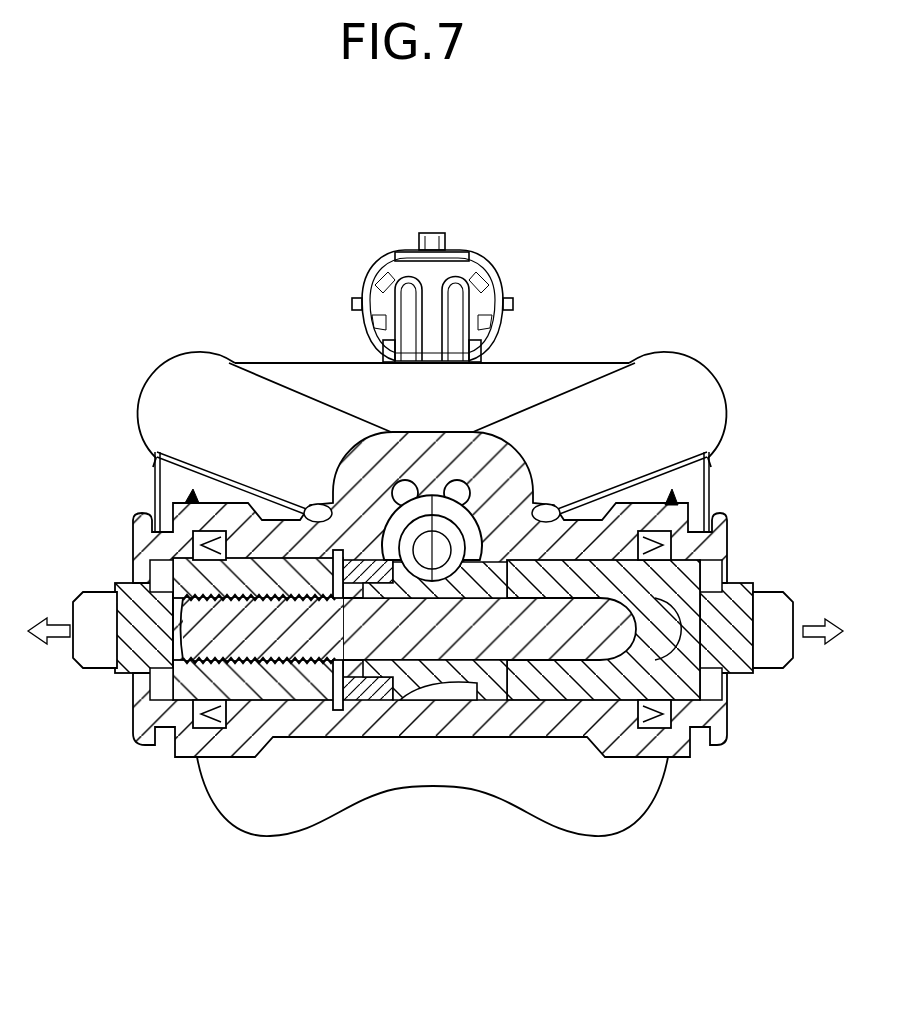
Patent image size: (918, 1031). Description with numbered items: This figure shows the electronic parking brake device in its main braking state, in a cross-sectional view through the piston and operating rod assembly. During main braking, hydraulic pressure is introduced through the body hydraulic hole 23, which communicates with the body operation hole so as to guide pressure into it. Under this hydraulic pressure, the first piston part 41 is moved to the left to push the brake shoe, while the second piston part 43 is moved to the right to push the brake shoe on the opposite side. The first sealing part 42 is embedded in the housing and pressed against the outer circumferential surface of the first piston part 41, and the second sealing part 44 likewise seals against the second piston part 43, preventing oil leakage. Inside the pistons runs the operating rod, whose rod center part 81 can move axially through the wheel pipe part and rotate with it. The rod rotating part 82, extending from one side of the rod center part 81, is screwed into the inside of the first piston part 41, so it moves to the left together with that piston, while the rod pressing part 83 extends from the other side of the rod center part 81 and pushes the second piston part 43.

The body hydraulic hole 23 is at (420, 498).
The first piston part 41 is at (143, 635).
The first sealing part 42 is at (198, 718).
The second piston part 43 is at (733, 662).
The second sealing part 44 is at (663, 717).
The rod center part 81 is at (432, 643).
The rod rotating part 82 is at (283, 643).
The rod pressing part 83 is at (565, 643).